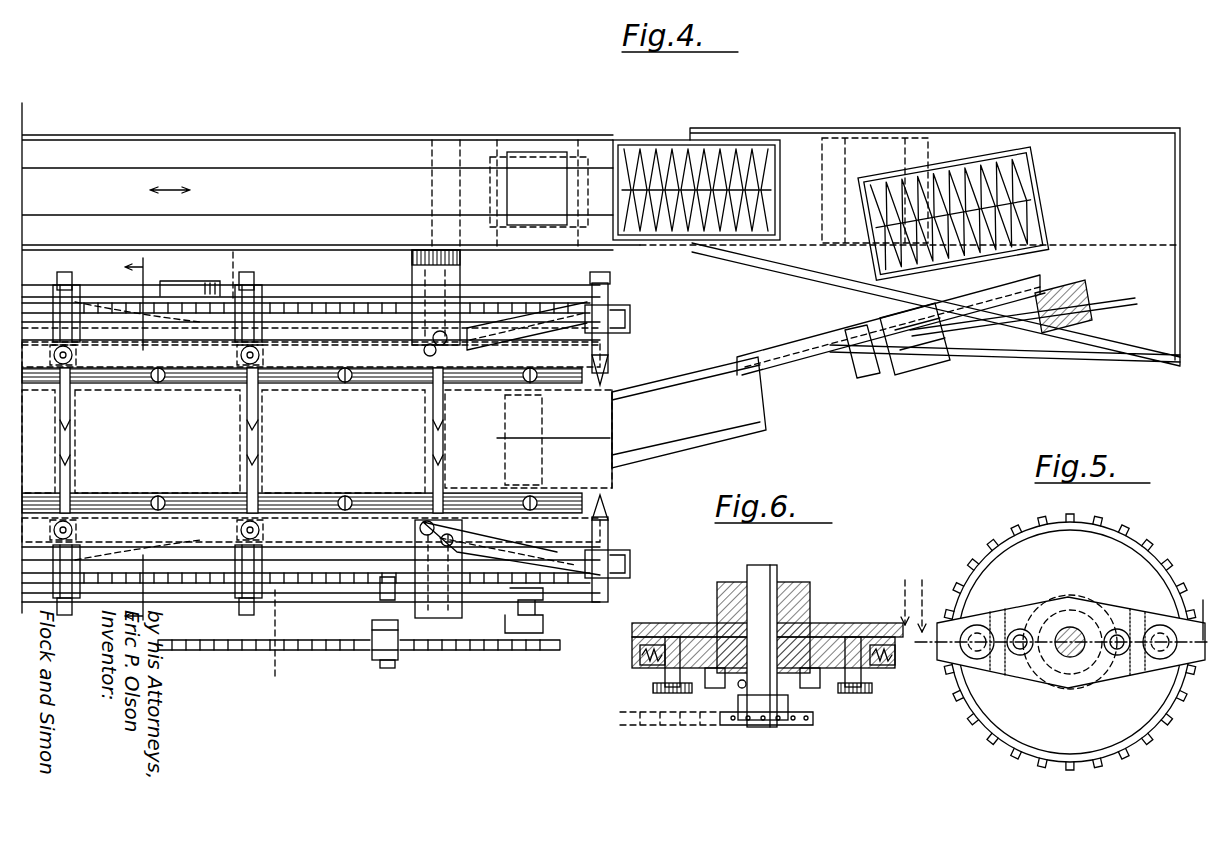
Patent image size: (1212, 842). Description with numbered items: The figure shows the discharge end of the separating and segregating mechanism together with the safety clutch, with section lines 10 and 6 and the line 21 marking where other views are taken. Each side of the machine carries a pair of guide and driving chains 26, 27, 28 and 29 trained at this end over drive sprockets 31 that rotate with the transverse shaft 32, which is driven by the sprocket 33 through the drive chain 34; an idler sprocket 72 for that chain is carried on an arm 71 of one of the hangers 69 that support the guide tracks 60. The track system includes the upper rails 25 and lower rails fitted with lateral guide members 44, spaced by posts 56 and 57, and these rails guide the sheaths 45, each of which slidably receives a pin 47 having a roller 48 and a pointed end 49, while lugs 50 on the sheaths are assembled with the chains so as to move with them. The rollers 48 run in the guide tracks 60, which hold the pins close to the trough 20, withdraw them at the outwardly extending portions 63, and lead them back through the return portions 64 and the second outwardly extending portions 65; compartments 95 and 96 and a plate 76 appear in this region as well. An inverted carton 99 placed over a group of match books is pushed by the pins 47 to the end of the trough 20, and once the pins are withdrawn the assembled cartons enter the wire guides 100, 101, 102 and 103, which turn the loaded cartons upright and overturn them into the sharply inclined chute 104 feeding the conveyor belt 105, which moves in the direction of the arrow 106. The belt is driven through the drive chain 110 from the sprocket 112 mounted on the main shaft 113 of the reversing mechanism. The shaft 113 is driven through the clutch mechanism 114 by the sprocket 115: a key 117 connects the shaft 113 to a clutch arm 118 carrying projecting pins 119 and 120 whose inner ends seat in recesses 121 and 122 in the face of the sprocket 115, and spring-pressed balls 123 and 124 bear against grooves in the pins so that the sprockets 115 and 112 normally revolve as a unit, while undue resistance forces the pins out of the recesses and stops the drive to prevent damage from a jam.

In FIG. 4, the conveyor belt 105 is at (123, 168).
In FIG. 4, the arrow 106 is at (170, 200).
In FIG. 4, the chute 104 is at (1142, 145).
In FIG. 4, the carton 99 is at (637, 140).
In FIG. 4, the wire guide 100 is at (1133, 300).
In FIG. 4, the wire guide 101 is at (1105, 350).
In FIG. 4, the wire guide 102 is at (1010, 350).
In FIG. 4, the wire guide 103 is at (818, 372).
In FIG. 4, the second outwardly extending portion 65 is at (88, 297).
In FIG. 4, the return portion 64 is at (233, 252).
In FIG. 4, the pin 47 is at (256, 286).
In FIG. 4, the hanger 69 is at (430, 255).
In FIG. 4, the section line 10 is at (147, 435).
In FIG. 4, the lateral guide member 44 is at (190, 285).
In FIG. 4, the sheath 45 is at (268, 291).
In FIG. 4, the guide and driving chain 29 is at (348, 300).
In FIG. 4, the guide track 25 is at (290, 320).
In FIG. 4, the post 57 is at (388, 305).
In FIG. 4, the shaft 32 is at (524, 280).
In FIG. 4, the drive sprocket 31 is at (555, 300).
In FIG. 4, the roller 48 is at (78, 355).
In FIG. 4, the guide and driving chain 28 is at (620, 345).
In FIG. 4, the trough 20 is at (605, 375).
In FIG. 4, the guide track 60 is at (302, 441).
In FIG. 4, the compartment 95 is at (373, 388).
In FIG. 4, the compartment 96 is at (375, 488).
In FIG. 4, the pointed end 49 is at (258, 455).
In FIG. 4, the outwardly extending portion 63 is at (486, 348).
In FIG. 4, the plate 76 is at (148, 500).
In FIG. 4, the guide and driving chain 27 is at (615, 535).
In FIG. 4, the post 56 is at (400, 576).
In FIG. 4, the drive chain 34 is at (188, 652).
In FIG. 4, the sprocket 33 is at (525, 652).
In FIG. 4, the guide and driving chain 26 is at (335, 640).
In FIG. 4, the idler sprocket 72 is at (375, 658).
In FIG. 4, the arm 71 is at (388, 668).
In FIG. 4, the lug 50 is at (580, 592).
In FIG. 6, the sprocket 115 is at (812, 600).
In FIG. 5, the sprocket 115 is at (1131, 723).
In FIG. 6, the recess 121 is at (853, 630).
In FIG. 6, the section line 21 is at (914, 591).
In FIG. 5, the section line 21 is at (921, 596).
In FIG. 6, the section line 6 is at (911, 607).
In FIG. 5, the section line 6 is at (1063, 611).
In FIG. 6, the spring-pressed ball 123 is at (665, 635).
In FIG. 6, the recess 122 is at (675, 640).
In FIG. 6, the clutch mechanism 114 is at (627, 676).
In FIG. 5, the clutch mechanism 114 is at (1024, 692).
In FIG. 6, the clutch arm 118 is at (650, 668).
In FIG. 5, the clutch arm 118 is at (995, 620).
In FIG. 6, the pin 120 is at (677, 693).
In FIG. 5, the pin 120 is at (975, 658).
In FIG. 6, the pin 119 is at (855, 693).
In FIG. 5, the pin 119 is at (1160, 658).
In FIG. 6, the spring-pressed ball 124 is at (862, 670).
In FIG. 6, the drive chain 110 is at (665, 727).
In FIG. 6, the key 117 is at (740, 700).
In FIG. 5, the key 117 is at (1057, 640).
In FIG. 6, the shaft 113 is at (752, 730).
In FIG. 5, the shaft 113 is at (1068, 656).
In FIG. 6, the sprocket 112 is at (790, 727).